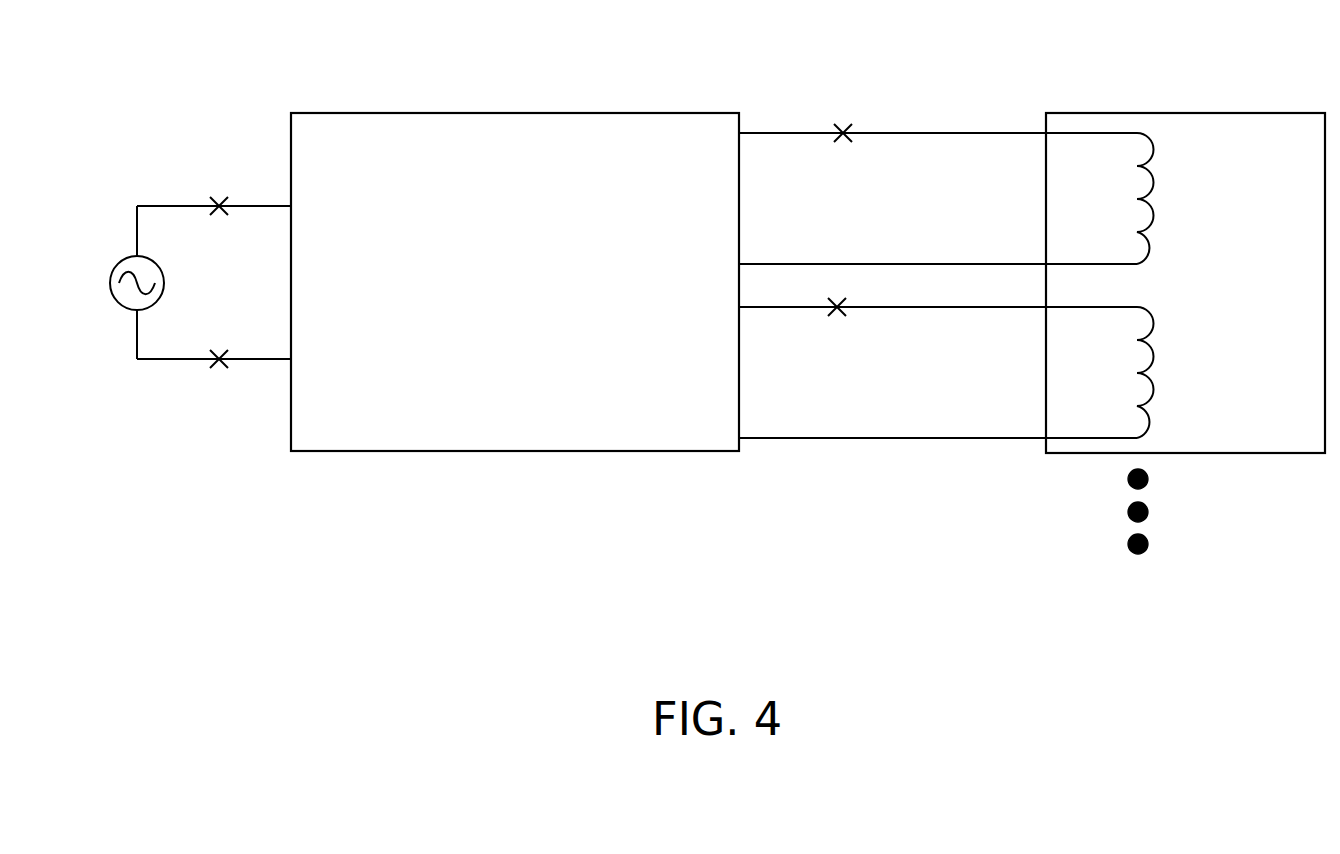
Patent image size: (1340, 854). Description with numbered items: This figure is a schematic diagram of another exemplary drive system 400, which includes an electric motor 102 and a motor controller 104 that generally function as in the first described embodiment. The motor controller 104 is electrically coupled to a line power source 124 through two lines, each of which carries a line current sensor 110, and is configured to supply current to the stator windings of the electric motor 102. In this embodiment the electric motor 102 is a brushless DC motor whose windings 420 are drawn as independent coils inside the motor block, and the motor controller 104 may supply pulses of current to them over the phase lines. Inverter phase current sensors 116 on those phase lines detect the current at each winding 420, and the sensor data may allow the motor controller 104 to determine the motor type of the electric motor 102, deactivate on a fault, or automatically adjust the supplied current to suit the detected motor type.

The drive system 400 is at (252, 58).
The line power source 124 is at (123, 258).
The line current sensor 110 is at (217, 199).
The motor controller 104 is at (523, 388).
The inverter phase current sensors 116 is at (840, 122).
The electric motor 102 is at (1257, 353).
The motor winding 420 is at (1150, 130).